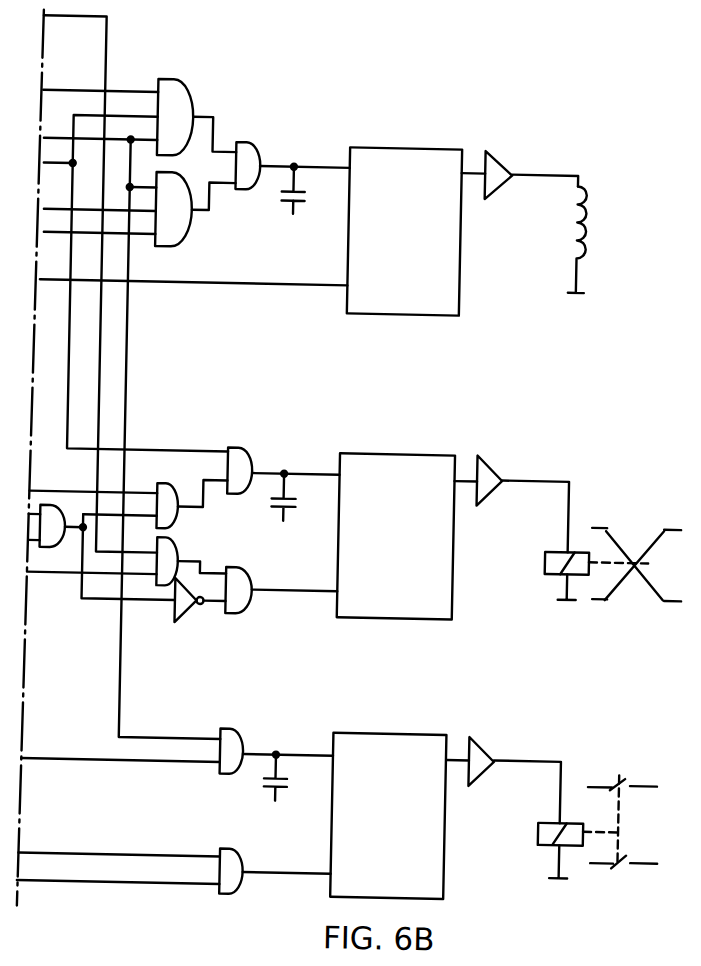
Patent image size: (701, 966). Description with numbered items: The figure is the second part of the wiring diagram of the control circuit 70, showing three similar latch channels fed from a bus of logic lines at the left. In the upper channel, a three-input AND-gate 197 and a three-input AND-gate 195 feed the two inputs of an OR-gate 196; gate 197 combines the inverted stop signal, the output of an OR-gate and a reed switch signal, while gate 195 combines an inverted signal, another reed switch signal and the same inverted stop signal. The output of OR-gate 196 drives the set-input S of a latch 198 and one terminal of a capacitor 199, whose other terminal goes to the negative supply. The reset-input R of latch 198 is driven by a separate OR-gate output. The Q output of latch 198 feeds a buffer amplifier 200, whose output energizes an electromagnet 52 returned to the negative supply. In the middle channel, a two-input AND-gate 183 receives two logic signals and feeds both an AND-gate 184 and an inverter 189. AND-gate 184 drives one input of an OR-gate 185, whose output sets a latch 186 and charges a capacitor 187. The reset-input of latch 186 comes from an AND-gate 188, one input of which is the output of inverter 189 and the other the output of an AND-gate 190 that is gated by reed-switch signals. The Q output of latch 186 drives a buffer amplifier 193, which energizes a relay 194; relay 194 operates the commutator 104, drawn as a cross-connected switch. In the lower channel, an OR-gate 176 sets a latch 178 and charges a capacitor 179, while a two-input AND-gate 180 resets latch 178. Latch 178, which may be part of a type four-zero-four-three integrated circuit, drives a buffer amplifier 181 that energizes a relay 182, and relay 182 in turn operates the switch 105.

The control circuit 70 is at (364, 80).
The three-input AND-gate 197 is at (165, 93).
The two-input OR-gate 196 is at (239, 146).
The three-input AND-gate 195 is at (170, 233).
The capacitor 199 is at (271, 199).
The latch 198 is at (386, 153).
The buffer amplifier 200 is at (484, 158).
The electromagnet 52 is at (568, 212).
The two-input AND-gate 183 is at (51, 511).
The two-input AND-gate 184 is at (164, 496).
The two-input OR-gate 185 is at (237, 450).
The capacitor 187 is at (272, 500).
The latch 186 is at (384, 463).
The two-input AND-gate 190 is at (174, 551).
The inverter 189 is at (180, 618).
The two-input AND-gate 188 is at (238, 611).
The buffer amplifier 193 is at (490, 471).
The relay 194 is at (546, 556).
The commutator 104 is at (636, 588).
The two-input OR-gate 176 is at (235, 735).
The capacitor 179 is at (270, 785).
The two-input AND-gate 180 is at (247, 855).
The latch 178 is at (385, 742).
The buffer amplifier 181 is at (486, 747).
The relay 182 is at (545, 826).
The switch 105 is at (625, 859).